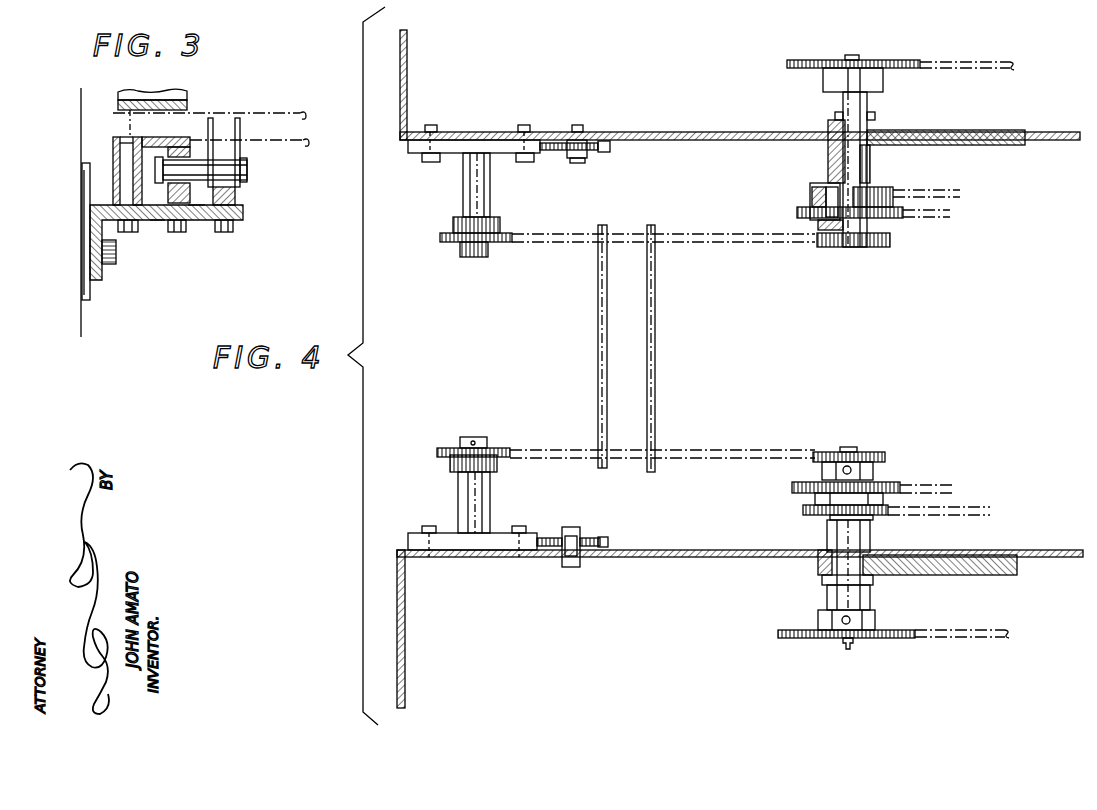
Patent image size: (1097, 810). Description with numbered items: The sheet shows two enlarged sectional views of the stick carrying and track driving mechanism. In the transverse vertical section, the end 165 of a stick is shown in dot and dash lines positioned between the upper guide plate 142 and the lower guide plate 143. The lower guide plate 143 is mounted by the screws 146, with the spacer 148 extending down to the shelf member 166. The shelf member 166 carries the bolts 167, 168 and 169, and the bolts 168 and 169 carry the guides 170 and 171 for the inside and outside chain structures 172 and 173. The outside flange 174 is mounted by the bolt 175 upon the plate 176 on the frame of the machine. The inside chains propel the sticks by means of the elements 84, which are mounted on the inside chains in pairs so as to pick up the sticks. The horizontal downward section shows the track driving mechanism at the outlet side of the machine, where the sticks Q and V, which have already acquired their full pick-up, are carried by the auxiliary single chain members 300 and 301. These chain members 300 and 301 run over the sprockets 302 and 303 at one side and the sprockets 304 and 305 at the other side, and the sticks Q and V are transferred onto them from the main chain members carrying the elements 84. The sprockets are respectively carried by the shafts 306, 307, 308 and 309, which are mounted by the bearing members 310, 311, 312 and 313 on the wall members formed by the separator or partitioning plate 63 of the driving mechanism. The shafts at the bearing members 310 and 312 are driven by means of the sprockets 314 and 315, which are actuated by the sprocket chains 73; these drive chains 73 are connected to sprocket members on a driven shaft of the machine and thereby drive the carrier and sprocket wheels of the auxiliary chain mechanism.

In FIG. 3, the upper guide plate 142 is at (127, 88).
In FIG. 3, the lower guide plate 143 is at (173, 157).
In FIG. 3, the elements 84 is at (238, 127).
In FIG. 3, the end of stick 165 is at (117, 117).
In FIG. 3, the screws 146 is at (121, 136).
In FIG. 3, the inside chain structure 172 is at (177, 167).
In FIG. 3, the spacer 148 is at (113, 168).
In FIG. 3, the outside chain structure 173 is at (230, 153).
In FIG. 3, the guide 171 is at (235, 195).
In FIG. 3, the plate 176 is at (82, 259).
In FIG. 3, the bolt 175 is at (117, 267).
In FIG. 3, the outside flange 174 is at (98, 287).
In FIG. 3, the bolt 167 is at (133, 233).
In FIG. 3, the shelf member 166 is at (158, 223).
In FIG. 3, the bolt 168 is at (180, 228).
In FIG. 3, the guide 170 is at (188, 197).
In FIG. 3, the bolt 169 is at (227, 233).
In FIG. 4, the separator or partitioning plate 63 is at (713, 140).
In FIG. 4, the drive chains 73 is at (975, 63).
In FIG. 4, the auxiliary single chain member 300 is at (725, 243).
In FIG. 4, the auxiliary single chain member 301 is at (718, 452).
In FIG. 4, the sprocket 302 is at (880, 248).
In FIG. 4, the sprocket 303 is at (452, 243).
In FIG. 4, the sprocket 304 is at (880, 456).
In FIG. 4, the sprocket 305 is at (446, 450).
In FIG. 4, the shaft 306 is at (845, 248).
In FIG. 4, the shaft 307 is at (472, 258).
In FIG. 4, the shaft 308 is at (852, 448).
In FIG. 4, the shaft 309 is at (472, 438).
In FIG. 4, the bearing member 310 is at (874, 170).
In FIG. 4, the bearing member 311 is at (492, 198).
In FIG. 4, the bearing member 312 is at (872, 542).
In FIG. 4, the bearing member 313 is at (492, 505).
In FIG. 4, the sprocket 314 is at (868, 62).
In FIG. 4, the sprocket 315 is at (886, 640).
In FIG. 4, the stick V is at (598, 327).
In FIG. 4, the stick Q is at (655, 375).